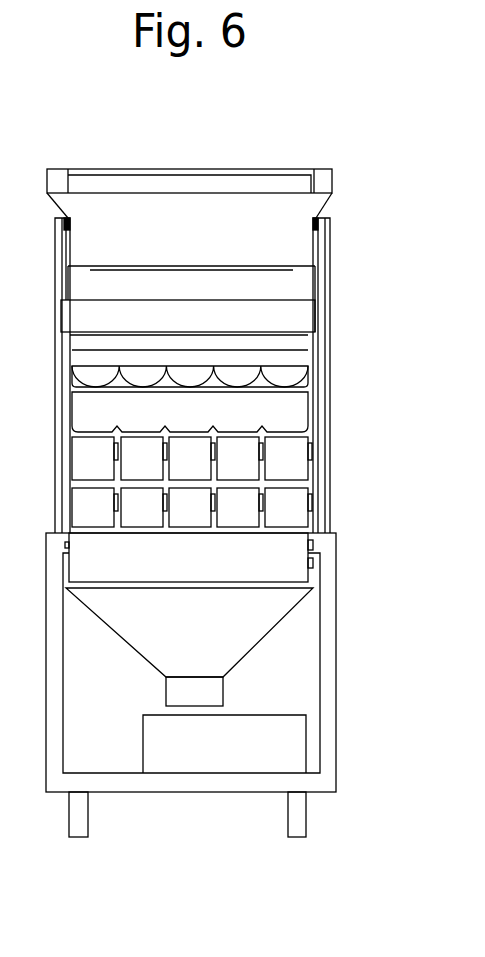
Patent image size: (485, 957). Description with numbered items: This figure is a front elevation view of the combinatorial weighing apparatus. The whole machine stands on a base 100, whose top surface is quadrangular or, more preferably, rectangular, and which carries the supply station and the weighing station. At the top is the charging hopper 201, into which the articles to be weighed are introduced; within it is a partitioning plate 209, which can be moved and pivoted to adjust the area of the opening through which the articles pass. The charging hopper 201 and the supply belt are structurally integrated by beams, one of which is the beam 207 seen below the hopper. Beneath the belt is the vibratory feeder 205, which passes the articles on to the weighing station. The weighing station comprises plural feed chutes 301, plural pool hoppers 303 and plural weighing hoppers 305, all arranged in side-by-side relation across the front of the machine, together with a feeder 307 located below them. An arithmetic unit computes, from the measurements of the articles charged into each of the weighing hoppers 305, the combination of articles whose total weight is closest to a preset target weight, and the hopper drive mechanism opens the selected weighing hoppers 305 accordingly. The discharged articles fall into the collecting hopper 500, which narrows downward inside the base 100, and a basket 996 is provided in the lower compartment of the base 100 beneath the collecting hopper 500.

The base 100 is at (340, 676).
The charging hopper 201 is at (288, 205).
The partitioning plate 209 is at (231, 178).
The beam 207 is at (330, 337).
The vibratory feeder 205 is at (305, 360).
The feed chutes 301 is at (305, 415).
The pool hoppers 303 is at (302, 467).
The weighing hoppers 305 is at (300, 515).
The feeder 307 is at (298, 545).
The collecting hopper 500 is at (290, 607).
The basket 996 is at (215, 767).